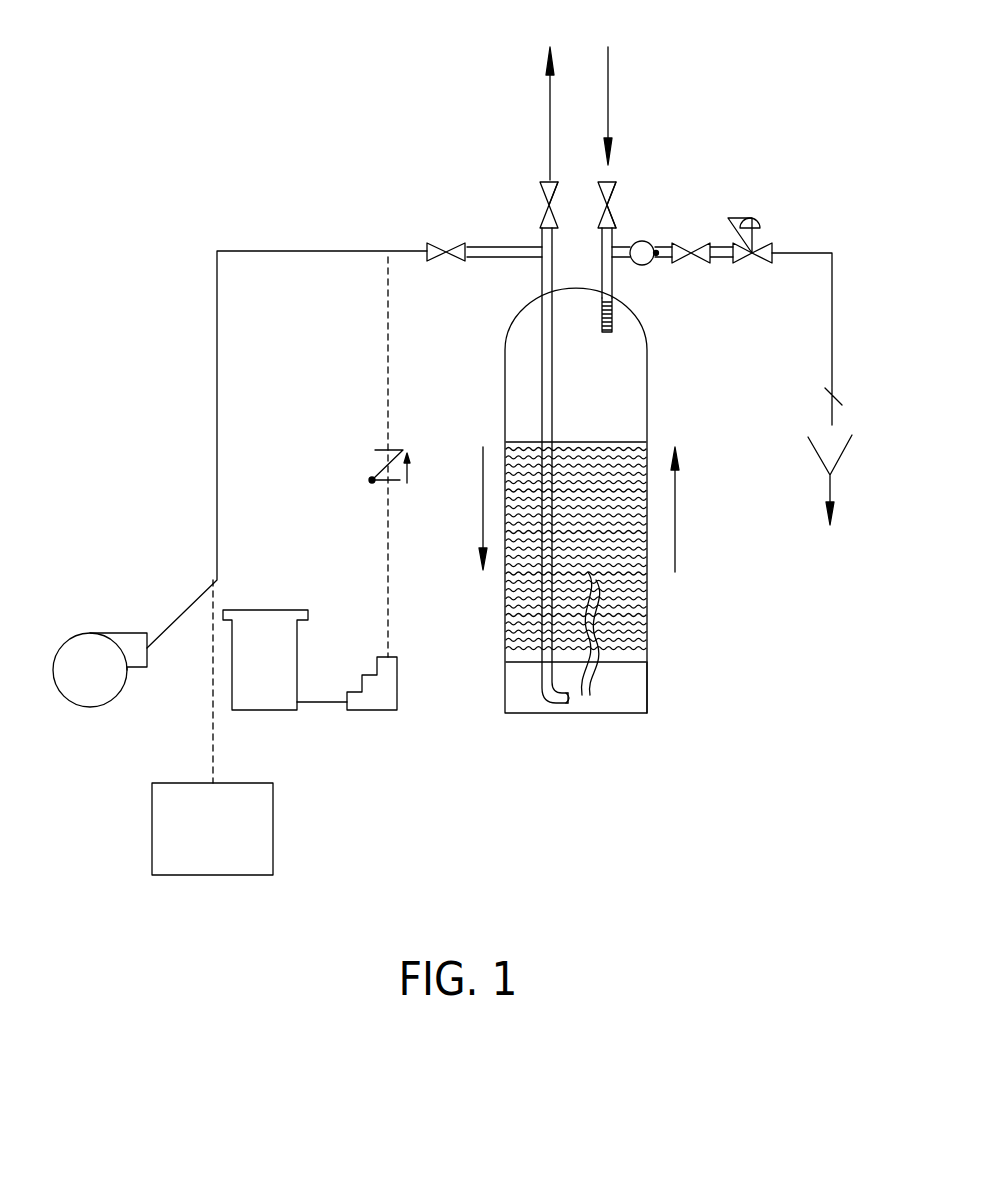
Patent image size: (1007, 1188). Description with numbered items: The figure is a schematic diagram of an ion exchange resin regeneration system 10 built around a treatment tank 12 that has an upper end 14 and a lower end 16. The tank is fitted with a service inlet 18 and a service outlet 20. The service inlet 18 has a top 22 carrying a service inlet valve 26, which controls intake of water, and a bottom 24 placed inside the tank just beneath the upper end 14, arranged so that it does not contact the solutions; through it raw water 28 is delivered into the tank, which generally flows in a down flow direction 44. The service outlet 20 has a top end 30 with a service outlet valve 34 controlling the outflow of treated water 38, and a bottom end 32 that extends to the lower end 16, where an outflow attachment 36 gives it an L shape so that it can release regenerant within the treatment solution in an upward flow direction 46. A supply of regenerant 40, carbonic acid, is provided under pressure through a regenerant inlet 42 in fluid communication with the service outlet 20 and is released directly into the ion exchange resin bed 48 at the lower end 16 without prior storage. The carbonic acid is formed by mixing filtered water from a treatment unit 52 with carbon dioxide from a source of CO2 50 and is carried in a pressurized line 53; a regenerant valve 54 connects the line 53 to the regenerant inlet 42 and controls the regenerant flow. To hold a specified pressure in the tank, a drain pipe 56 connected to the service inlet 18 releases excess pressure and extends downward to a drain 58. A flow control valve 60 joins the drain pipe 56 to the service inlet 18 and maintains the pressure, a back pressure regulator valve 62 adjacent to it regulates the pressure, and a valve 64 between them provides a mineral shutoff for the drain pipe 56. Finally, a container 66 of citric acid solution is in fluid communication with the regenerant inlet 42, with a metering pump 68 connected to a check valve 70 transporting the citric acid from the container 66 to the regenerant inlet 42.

The ion exchange resin regeneration system 10 is at (390, 90).
The treatment tank 12 is at (647, 637).
The upper end 14 is at (633, 306).
The lower end 16 is at (648, 700).
The service inlet 18 is at (613, 232).
The service outlet 20 is at (543, 231).
The top 22 is at (608, 183).
The bottom 24 is at (652, 347).
The service inlet valve 26 is at (614, 192).
The raw water 28 is at (609, 99).
The top end 30 is at (543, 181).
The bottom end 32 is at (537, 681).
The service outlet valve 34 is at (557, 180).
The outflow attachment 36 is at (562, 702).
The treated water 38 is at (547, 107).
The regenerant 40 is at (588, 695).
The regenerant inlet 42 is at (478, 259).
The down flow direction 44 is at (480, 542).
The upward flow direction 46 is at (678, 498).
The ion exchange resin bed 48 is at (628, 698).
The source of CO2 50 is at (100, 645).
The treatment unit 52 is at (273, 830).
The pressurized line 53 is at (217, 408).
The regenerant valve 54 is at (427, 247).
The drain pipe 56 is at (721, 249).
The drain 58 is at (840, 456).
The flow control valve 60 is at (648, 263).
The back pressure regulator valve 62 is at (763, 248).
The valve 64 is at (677, 243).
The container 66 is at (270, 693).
The metering pump 68 is at (373, 697).
The check valve 70 is at (370, 480).